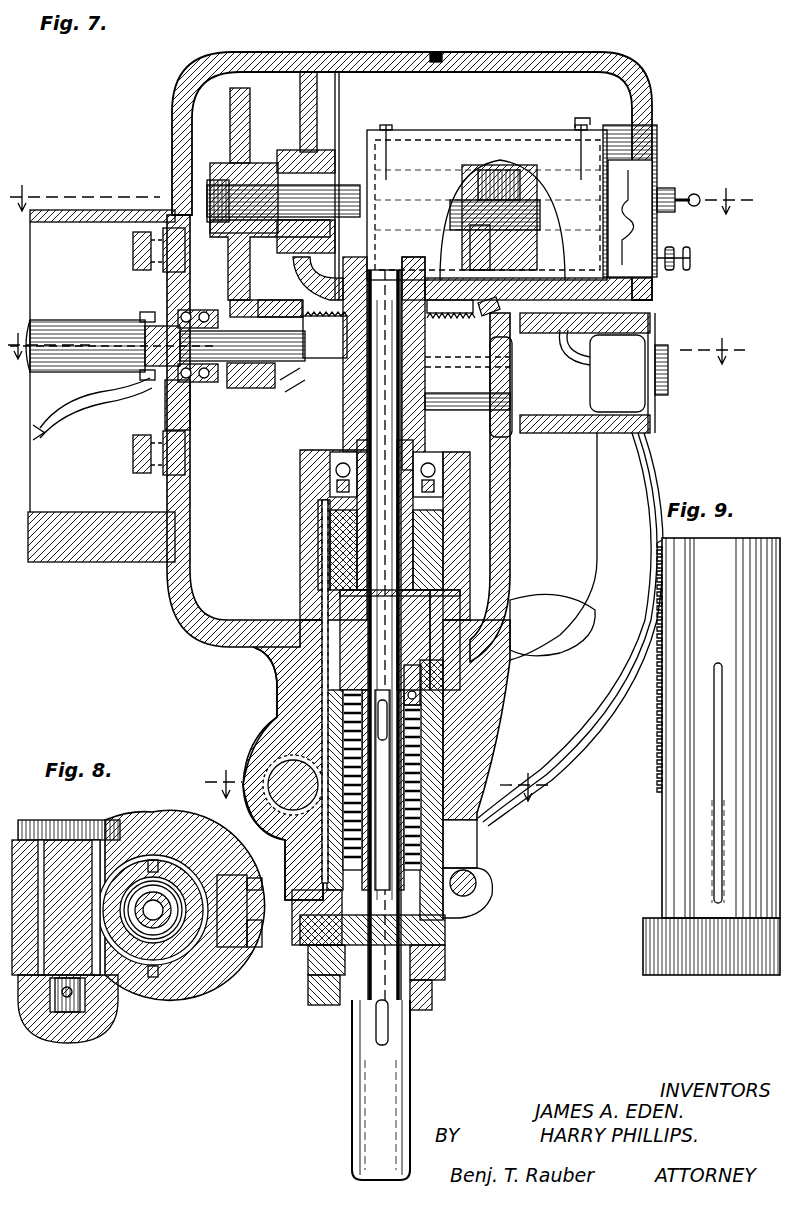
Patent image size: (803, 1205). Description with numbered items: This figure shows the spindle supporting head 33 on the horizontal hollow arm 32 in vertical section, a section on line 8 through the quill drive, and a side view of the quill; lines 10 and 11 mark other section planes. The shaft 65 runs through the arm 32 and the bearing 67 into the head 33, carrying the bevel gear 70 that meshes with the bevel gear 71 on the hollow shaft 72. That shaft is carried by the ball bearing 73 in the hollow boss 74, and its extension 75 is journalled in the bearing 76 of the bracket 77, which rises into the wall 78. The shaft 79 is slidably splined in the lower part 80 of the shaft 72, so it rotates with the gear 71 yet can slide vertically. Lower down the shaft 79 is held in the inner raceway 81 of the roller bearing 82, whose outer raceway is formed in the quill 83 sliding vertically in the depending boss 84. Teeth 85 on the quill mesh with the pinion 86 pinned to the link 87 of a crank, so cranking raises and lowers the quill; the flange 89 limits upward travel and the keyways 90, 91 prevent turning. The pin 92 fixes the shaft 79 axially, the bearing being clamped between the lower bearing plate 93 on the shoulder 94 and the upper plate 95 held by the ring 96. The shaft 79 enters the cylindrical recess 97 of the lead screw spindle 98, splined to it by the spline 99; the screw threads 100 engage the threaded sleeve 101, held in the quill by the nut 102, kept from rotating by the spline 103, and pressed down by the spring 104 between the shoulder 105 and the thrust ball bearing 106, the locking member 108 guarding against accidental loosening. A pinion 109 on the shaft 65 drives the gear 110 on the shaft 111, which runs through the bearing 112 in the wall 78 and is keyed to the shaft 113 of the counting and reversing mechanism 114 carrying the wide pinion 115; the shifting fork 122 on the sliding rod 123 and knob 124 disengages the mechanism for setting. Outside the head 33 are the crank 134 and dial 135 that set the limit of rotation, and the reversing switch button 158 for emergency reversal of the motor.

In FIG. 7, the spindle supporting head 33 is at (650, 98).
In FIG. 7, the horizontal hollow arm 32 is at (106, 386).
In FIG. 7, the shaft 65 is at (157, 326).
In FIG. 7, the bearing 67 is at (145, 318).
In FIG. 7, the pinion 109 is at (240, 382).
In FIG. 7, the bevel gear 70 is at (285, 388).
In FIG. 7, the bearing 76 is at (325, 335).
In FIG. 7, the hollow boss 74 is at (303, 483).
In FIG. 7, the shaft 79 is at (372, 432).
In FIG. 7, the lower part of shaft 80 is at (430, 510).
In FIG. 7, the ball bearing 73 is at (428, 465).
In FIG. 7, the hollow shaft 72 is at (428, 378).
In FIG. 7, the bevel gear 71 is at (438, 320).
In FIG. 7, the shifting fork 122 is at (483, 321).
In FIG. 7, the sliding rod 123 is at (478, 278).
In FIG. 7, the reversing switch button 158 is at (668, 385).
In FIG. 7, the shoulder 94 is at (505, 630).
In FIG. 7, the gear 110 is at (233, 105).
In FIG. 7, the vertical bracket wall 78 is at (312, 107).
In FIG. 7, the bearing 112 is at (312, 152).
In FIG. 7, the shaft 111 is at (210, 195).
In FIG. 7, the shaft 113 is at (325, 195).
In FIG. 7, the counting and reversing mechanism 114 is at (440, 135).
In FIG. 7, the wide pinion 115 is at (475, 175).
In FIG. 7, the dial 135 is at (660, 140).
In FIG. 7, the crank 134 is at (683, 193).
In FIG. 7, the knob 124 is at (672, 250).
In FIG. 7, the extension 75 is at (400, 290).
In FIG. 7, the bracket 77 is at (312, 292).
In FIG. 7, the section line 10 is at (382, 189).
In FIG. 7, the section line 11 is at (376, 331).
In FIG. 7, the section line 8 is at (378, 775).
In FIG. 7, the ring 96 is at (318, 535).
In FIG. 7, the inner raceway 81 is at (302, 585).
In FIG. 7, the roller bearing 82 is at (305, 622).
In FIG. 7, the upper plate 95 is at (440, 565).
In FIG. 7, the pin 92 is at (435, 600).
In FIG. 7, the lower bearing plate 93 is at (445, 625).
In FIG. 7, the quill 83 is at (280, 697).
In FIG. 8, the quill 83 is at (137, 848).
In FIG. 9, the quill 83 is at (660, 832).
In FIG. 7, the hollow depending boss 84 is at (292, 716).
In FIG. 8, the hollow depending boss 84 is at (160, 803).
In FIG. 7, the pinion 86 is at (268, 755).
In FIG. 8, the pinion 86 is at (42, 853).
In FIG. 7, the teeth 85 is at (285, 672).
In FIG. 9, the teeth 85 is at (660, 770).
In FIG. 7, the thrust ball bearing 106 is at (430, 720).
In FIG. 7, the spring 104 is at (430, 760).
In FIG. 7, the screw threads 100 is at (423, 735).
In FIG. 7, the shoulder 105 is at (420, 862).
In FIG. 7, the sleeve 101 is at (410, 885).
In FIG. 7, the cylindrical recess 97 is at (445, 930).
In FIG. 7, the slidable spline 103 is at (322, 942).
In FIG. 7, the ring or flange 89 is at (312, 970).
In FIG. 9, the ring or flange 89 is at (650, 920).
In FIG. 7, the locking member 108 is at (312, 1005).
In FIG. 7, the nut 102 is at (410, 990).
In FIG. 7, the lead screw spindle 98 is at (410, 1035).
In FIG. 8, the keyways 91 is at (150, 928).
In FIG. 8, the spline 99 is at (150, 975).
In FIG. 8, the longitudinal keyways 90 is at (185, 992).
In FIG. 9, the longitudinal keyways 90 is at (712, 715).
In FIG. 8, the link 87 is at (80, 1043).